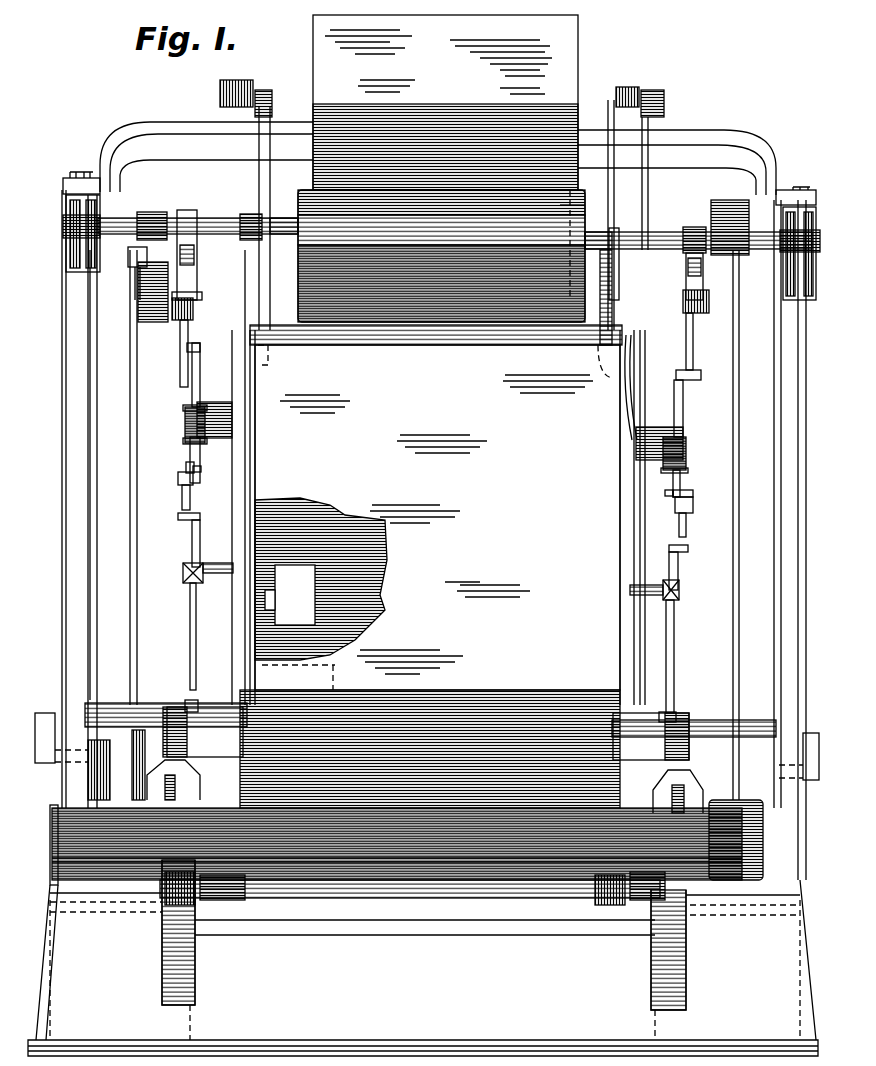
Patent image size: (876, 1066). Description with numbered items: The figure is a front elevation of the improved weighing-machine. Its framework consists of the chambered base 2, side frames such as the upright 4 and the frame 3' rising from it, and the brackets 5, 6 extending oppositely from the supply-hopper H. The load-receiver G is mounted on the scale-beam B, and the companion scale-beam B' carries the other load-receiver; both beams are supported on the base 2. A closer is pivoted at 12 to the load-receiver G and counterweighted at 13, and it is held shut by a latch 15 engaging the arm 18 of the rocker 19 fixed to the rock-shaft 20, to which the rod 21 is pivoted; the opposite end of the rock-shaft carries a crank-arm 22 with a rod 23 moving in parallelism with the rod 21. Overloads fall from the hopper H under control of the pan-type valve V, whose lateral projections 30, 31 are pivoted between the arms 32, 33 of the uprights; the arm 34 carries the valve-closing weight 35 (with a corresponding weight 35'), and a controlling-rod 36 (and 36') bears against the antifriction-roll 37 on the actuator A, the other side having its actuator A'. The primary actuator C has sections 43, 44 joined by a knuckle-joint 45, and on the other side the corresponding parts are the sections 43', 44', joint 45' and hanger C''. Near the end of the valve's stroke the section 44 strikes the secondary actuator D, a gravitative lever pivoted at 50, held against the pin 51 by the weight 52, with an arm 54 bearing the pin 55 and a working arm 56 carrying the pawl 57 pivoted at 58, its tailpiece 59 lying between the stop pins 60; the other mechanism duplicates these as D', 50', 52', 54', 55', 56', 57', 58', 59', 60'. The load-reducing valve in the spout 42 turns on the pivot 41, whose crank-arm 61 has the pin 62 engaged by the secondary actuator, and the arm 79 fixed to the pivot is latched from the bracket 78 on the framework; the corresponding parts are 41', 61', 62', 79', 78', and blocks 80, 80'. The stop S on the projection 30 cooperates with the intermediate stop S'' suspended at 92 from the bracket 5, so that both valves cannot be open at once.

The chambered base 2 is at (423, 958).
The right frame post 3' is at (785, 533).
The side frame 4 is at (90, 528).
The bracket 5 is at (718, 132).
The bracket 6 is at (168, 124).
The closer pivot 12 is at (432, 880).
The counterweight 13 is at (215, 900).
The latch 15 is at (246, 470).
The rocker arm 18 is at (256, 390).
The rocker 19 is at (250, 262).
The rock-shaft 20 is at (432, 345).
The rod 21 is at (268, 365).
The crank-arm 22 is at (598, 345).
The rod 23 is at (626, 395).
The lateral projection 30 is at (660, 240).
The lateral projection 31 is at (218, 220).
The arm 32 is at (814, 240).
The arm 33 is at (98, 222).
The rearwardly-extending arm 34 is at (135, 258).
The valve-closing weight 35 is at (730, 216).
The valve-closing weight 35' is at (133, 295).
The controlling-rod 36 is at (750, 525).
The controlling-rod 36' is at (116, 477).
The antifriction-roll 37 is at (736, 840).
The load-reducing valve pivot 41 is at (208, 581).
The load-reducing valve pivot 41' is at (654, 598).
The spout 42 is at (300, 655).
The actuator-section 43 is at (198, 252).
The actuator-section 43' is at (709, 264).
The actuator-section 44 is at (164, 353).
The actuator-section 44' is at (706, 341).
The knuckle-joint 45 is at (168, 319).
The knuckle-joint 45' is at (704, 311).
The lever pivot 50 is at (214, 409).
The lever pivot 50' is at (680, 443).
The pin 51 is at (185, 415).
The weight 52 is at (175, 448).
The weight 52' is at (693, 458).
The lever arm 54 is at (171, 375).
The lever arm 54' is at (698, 408).
The pin 55 is at (171, 352).
The pin 55' is at (705, 375).
The working arm 56 is at (171, 460).
The working arm 56' is at (698, 479).
The pawl 57 is at (170, 498).
The pawl 57' is at (701, 522).
The pawl pivot 58 is at (168, 483).
The pawl pivot 58' is at (703, 502).
The tailpiece 59 is at (208, 465).
The tailpiece 59' is at (658, 490).
The stop pins 60 is at (174, 473).
The stop pins 60' is at (702, 486).
The crank-arm 61 is at (180, 543).
The crank-arm 61' is at (689, 571).
The pin 62 is at (172, 520).
The pin 62' is at (697, 542).
The bracket 78 is at (166, 702).
The bracket 78' is at (694, 746).
The arm 79 is at (175, 636).
The arm 79' is at (686, 656).
The block 80 is at (175, 696).
The block 80' is at (681, 701).
The stop pivot 92 is at (606, 140).
The actuator A is at (776, 792).
The actuator A' is at (139, 753).
The scale-beam B is at (396, 845).
The scale-beam B' is at (429, 749).
The primary actuator C is at (187, 255).
The hanger C'' is at (703, 276).
The secondary actuator D is at (190, 414).
The secondary actuator D' is at (683, 443).
The load-receiver G is at (437, 517).
The supply-hopper H is at (445, 102).
The stop S is at (559, 245).
The intermediate stop S'' is at (565, 215).
The valve V is at (441, 256).